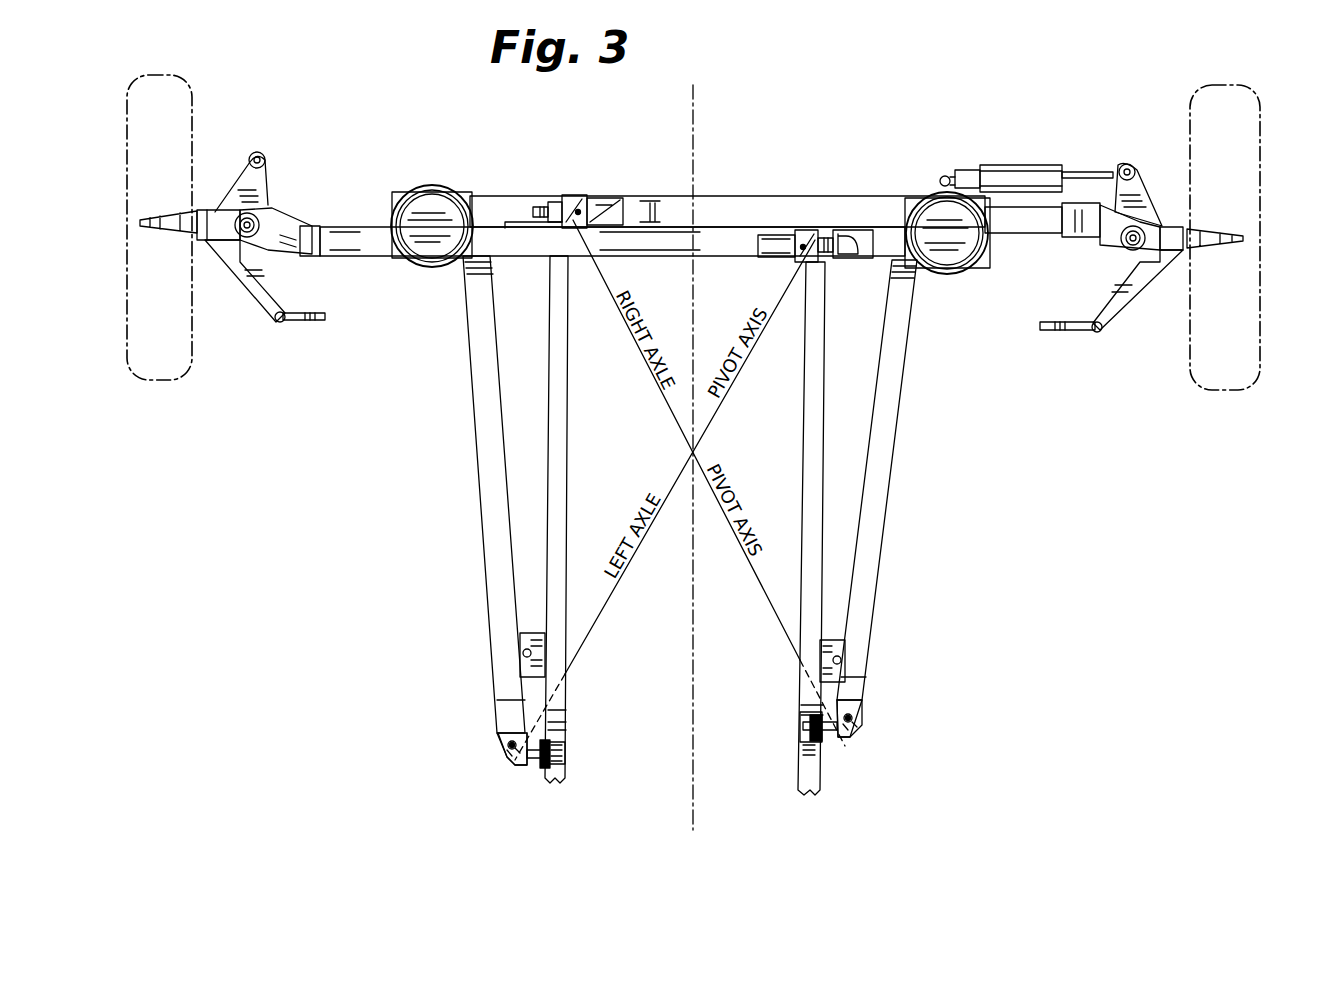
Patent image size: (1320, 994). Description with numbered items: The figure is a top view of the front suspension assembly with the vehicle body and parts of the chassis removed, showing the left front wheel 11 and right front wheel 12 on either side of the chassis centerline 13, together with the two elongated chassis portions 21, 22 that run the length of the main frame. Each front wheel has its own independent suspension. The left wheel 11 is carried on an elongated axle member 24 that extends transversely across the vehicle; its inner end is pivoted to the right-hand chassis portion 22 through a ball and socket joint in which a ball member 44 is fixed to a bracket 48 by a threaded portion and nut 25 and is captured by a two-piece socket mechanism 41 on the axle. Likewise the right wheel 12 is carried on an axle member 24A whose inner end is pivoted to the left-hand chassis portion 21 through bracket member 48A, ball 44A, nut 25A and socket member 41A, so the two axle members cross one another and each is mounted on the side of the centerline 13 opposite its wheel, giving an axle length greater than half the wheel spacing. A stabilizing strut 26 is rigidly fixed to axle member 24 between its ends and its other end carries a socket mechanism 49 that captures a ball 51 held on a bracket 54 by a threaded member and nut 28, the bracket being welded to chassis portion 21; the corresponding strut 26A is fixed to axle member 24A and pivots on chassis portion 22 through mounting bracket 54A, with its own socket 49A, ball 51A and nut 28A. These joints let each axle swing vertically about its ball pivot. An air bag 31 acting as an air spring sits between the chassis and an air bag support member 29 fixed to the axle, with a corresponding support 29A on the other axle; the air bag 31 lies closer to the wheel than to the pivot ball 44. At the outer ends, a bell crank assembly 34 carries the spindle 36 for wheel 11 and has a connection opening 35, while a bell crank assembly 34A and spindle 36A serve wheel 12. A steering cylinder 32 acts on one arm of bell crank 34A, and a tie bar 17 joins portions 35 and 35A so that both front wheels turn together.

The left front wheel 11 is at (178, 118).
The right front wheel 12 is at (1207, 103).
The chassis centerline 13 is at (712, 130).
The tie bar 17 is at (318, 322).
The chassis portion 21 is at (568, 446).
The chassis portion 22 is at (822, 498).
The axle member 24 is at (373, 242).
The axle member 24A is at (747, 208).
The nut 25 is at (858, 258).
The nut 25A is at (540, 206).
The stabilizing strut 26 is at (487, 440).
The stabilizing strut 26A is at (878, 512).
The nut 28 is at (563, 760).
The right lower pivot mount 28A is at (800, 742).
The air bag support member 29 is at (400, 188).
The right bearing housing 29A is at (985, 258).
The air bag 31 is at (443, 183).
The steering cylinder 32 is at (1030, 175).
The bell crank assembly 34 is at (257, 178).
The bell crank assembly 34A is at (1123, 313).
The connection opening 35 is at (280, 320).
The connection opening 35A is at (1105, 329).
The spindle 36 is at (173, 217).
The spindle 36A is at (1217, 248).
The socket mechanism 41 is at (805, 233).
The socket member 41A is at (597, 218).
The ball member 44 is at (820, 240).
The ball 44A is at (570, 205).
The bracket 48 is at (945, 177).
The bracket member 48A is at (547, 203).
The socket mechanism 49 is at (508, 743).
The right lower pivot block 49A is at (855, 717).
The ball 51 is at (520, 757).
The right lower pivot pin 51A is at (855, 733).
The bracket 54 is at (532, 742).
The mounting bracket 54A is at (827, 742).